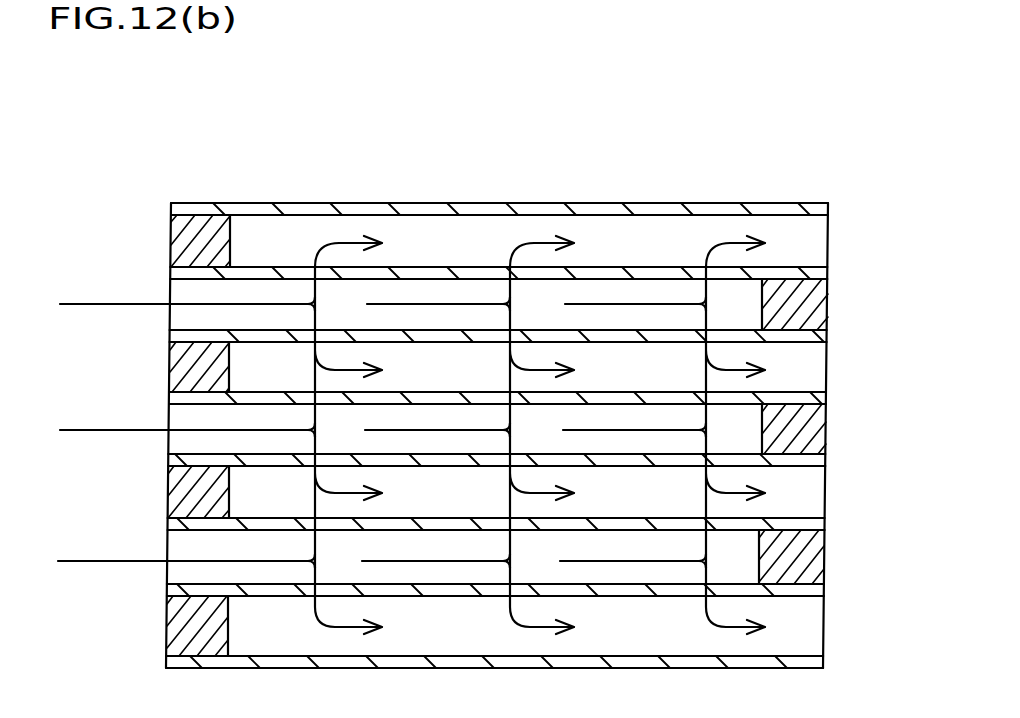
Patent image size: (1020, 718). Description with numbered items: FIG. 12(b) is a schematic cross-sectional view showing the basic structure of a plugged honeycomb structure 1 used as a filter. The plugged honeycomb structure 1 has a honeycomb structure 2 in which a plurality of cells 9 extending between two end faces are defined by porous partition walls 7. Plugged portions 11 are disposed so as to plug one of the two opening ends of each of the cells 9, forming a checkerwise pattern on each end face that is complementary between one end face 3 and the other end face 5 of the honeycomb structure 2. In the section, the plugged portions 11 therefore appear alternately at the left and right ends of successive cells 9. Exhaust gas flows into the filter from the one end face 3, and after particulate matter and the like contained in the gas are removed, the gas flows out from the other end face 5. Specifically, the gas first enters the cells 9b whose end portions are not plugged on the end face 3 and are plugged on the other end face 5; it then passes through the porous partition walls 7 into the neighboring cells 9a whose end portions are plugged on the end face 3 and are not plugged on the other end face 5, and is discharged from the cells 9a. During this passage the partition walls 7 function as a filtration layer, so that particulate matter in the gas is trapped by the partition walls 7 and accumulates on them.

The plugged honeycomb structure 1 is at (728, 180).
The honeycomb structure 2 is at (261, 205).
The one end face 3 is at (169, 444).
The other end face 5 is at (828, 488).
The porous partition walls 7 is at (603, 273).
The cells 9 is at (488, 126).
The cells plugged on the end face 3 9a is at (417, 243).
The cells not plugged on the end face 3 9b is at (485, 300).
The plugged portions 11 is at (172, 368).